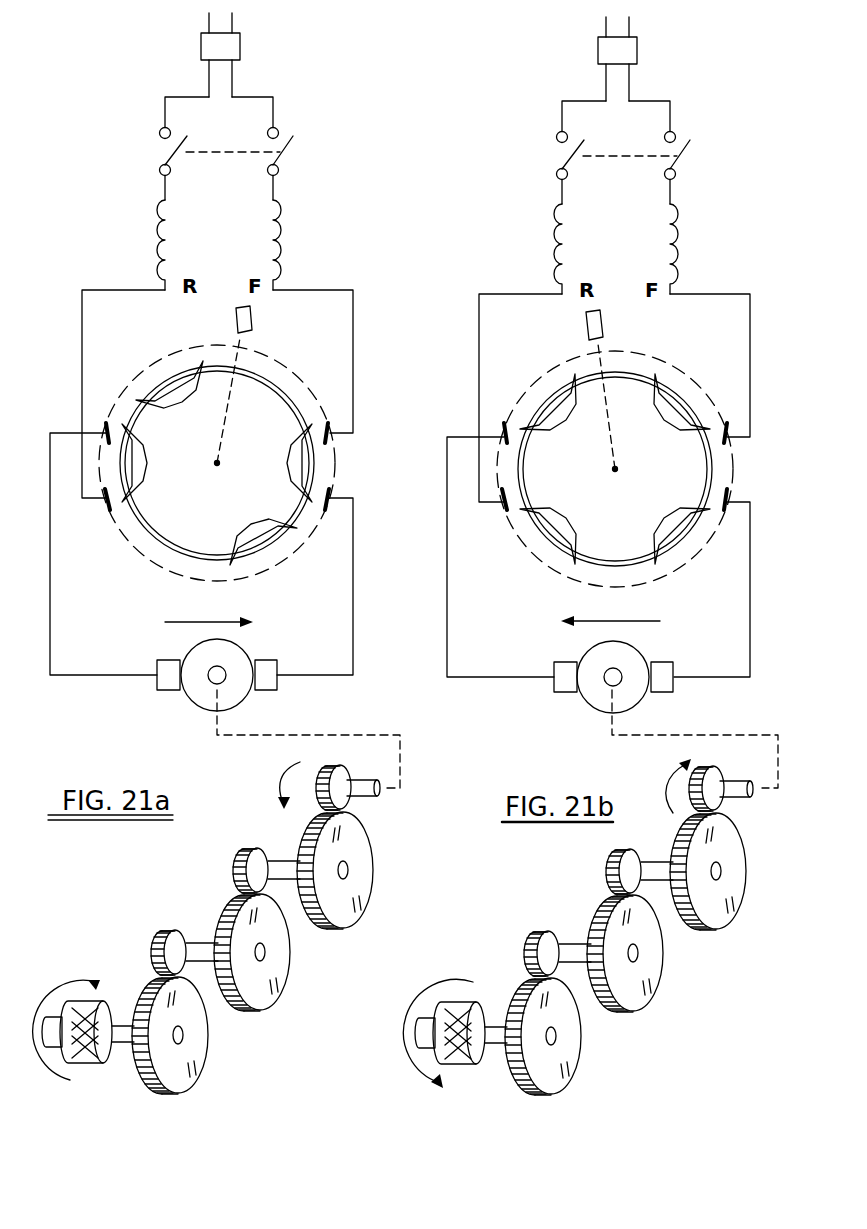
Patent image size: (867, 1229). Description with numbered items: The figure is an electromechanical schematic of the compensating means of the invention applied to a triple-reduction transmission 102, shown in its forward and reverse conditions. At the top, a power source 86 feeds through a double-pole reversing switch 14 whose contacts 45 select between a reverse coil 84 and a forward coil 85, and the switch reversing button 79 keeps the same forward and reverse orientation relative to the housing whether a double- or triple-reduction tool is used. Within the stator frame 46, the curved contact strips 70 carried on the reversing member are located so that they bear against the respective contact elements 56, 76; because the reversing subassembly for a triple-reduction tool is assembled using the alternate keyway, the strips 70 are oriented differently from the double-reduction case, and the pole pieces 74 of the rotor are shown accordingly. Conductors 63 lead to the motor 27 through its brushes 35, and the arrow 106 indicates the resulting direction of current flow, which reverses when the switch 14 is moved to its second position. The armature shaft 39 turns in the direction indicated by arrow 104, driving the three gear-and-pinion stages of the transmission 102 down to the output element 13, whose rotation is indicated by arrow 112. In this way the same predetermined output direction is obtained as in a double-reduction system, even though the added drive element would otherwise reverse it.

In FIG. 21A, the knurled knob 13 is at (110, 1063).
In FIG. 21B, the knurled knob 13 is at (458, 1062).
In FIG. 21A, the double-pole switch 14 is at (291, 147).
In FIG. 21B, the double-pole switch 14 is at (664, 140).
In FIG. 21A, the motor 27 is at (237, 655).
In FIG. 21B, the motor 27 is at (646, 669).
In FIG. 21A, the motor brushes 35 is at (172, 690).
In FIG. 21B, the motor brushes 35 is at (643, 708).
In FIG. 21A, the armature shaft 39 is at (362, 797).
In FIG. 21B, the armature shaft 39 is at (736, 809).
In FIG. 21A, the switch contacts 45 is at (165, 189).
In FIG. 21B, the switch contacts 45 is at (622, 187).
In FIG. 21A, the stator housing 46 is at (82, 345).
In FIG. 21B, the stator housing 46 is at (609, 398).
In FIG. 21A, the contact element 56 is at (108, 507).
In FIG. 21B, the contact element 56 is at (500, 500).
In FIG. 21A, the conductor 63 is at (50, 603).
In FIG. 21B, the conductor 63 is at (617, 557).
In FIG. 21A, the curved contact strips 70 is at (277, 406).
In FIG. 21B, the curved contact strips 70 is at (630, 384).
In FIG. 21A, the pole pieces 74 is at (135, 447).
In FIG. 21B, the pole pieces 74 is at (530, 448).
In FIG. 21A, the contact element 76 is at (108, 427).
In FIG. 21B, the contact element 76 is at (503, 436).
In FIG. 21A, the switch reversing button 79 is at (252, 320).
In FIG. 21B, the switch reversing button 79 is at (603, 322).
In FIG. 21A, the reverse coil 84 is at (157, 232).
In FIG. 21B, the reverse coil 84 is at (528, 249).
In FIG. 21A, the forward coil 85 is at (282, 248).
In FIG. 21B, the forward coil 85 is at (713, 249).
In FIG. 21A, the power supply 86 is at (240, 47).
In FIG. 21B, the power supply 86 is at (655, 59).
In FIG. 21A, the triple-reduction transmission 102 is at (381, 893).
In FIG. 21B, the triple-reduction transmission 102 is at (631, 954).
In FIG. 21A, the arrow indicating armature shaft rotation direction 104 is at (300, 762).
In FIG. 21B, the arrow indicating armature shaft rotation direction 104 is at (672, 760).
In FIG. 21A, the arrow indicating current direction 106 is at (190, 619).
In FIG. 21B, the arrow indicating current direction 106 is at (640, 619).
In FIG. 21A, the arrow indicating output shaft rotation direction 112 is at (84, 972).
In FIG. 21B, the arrow indicating output shaft rotation direction 112 is at (430, 1021).